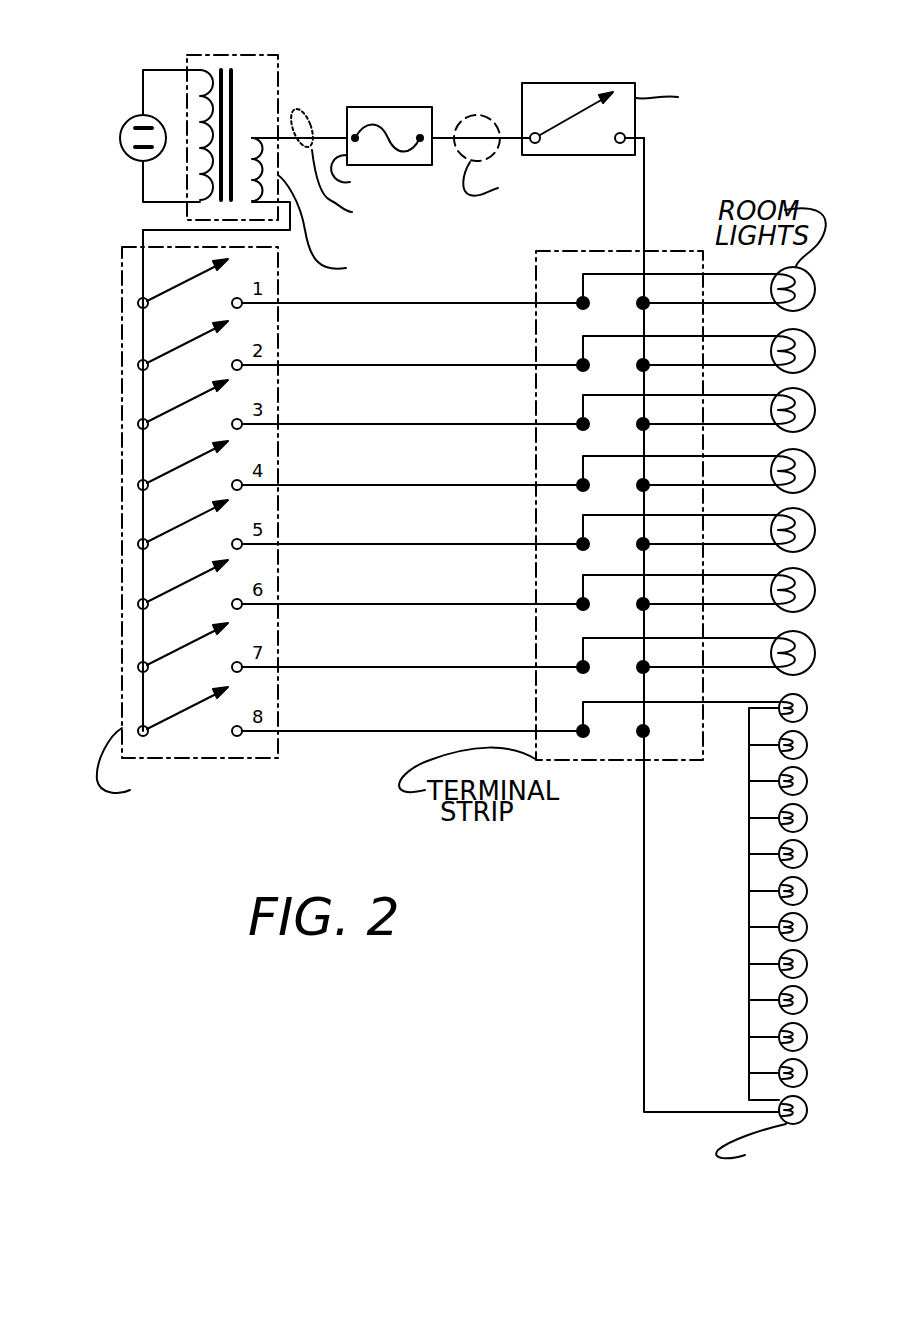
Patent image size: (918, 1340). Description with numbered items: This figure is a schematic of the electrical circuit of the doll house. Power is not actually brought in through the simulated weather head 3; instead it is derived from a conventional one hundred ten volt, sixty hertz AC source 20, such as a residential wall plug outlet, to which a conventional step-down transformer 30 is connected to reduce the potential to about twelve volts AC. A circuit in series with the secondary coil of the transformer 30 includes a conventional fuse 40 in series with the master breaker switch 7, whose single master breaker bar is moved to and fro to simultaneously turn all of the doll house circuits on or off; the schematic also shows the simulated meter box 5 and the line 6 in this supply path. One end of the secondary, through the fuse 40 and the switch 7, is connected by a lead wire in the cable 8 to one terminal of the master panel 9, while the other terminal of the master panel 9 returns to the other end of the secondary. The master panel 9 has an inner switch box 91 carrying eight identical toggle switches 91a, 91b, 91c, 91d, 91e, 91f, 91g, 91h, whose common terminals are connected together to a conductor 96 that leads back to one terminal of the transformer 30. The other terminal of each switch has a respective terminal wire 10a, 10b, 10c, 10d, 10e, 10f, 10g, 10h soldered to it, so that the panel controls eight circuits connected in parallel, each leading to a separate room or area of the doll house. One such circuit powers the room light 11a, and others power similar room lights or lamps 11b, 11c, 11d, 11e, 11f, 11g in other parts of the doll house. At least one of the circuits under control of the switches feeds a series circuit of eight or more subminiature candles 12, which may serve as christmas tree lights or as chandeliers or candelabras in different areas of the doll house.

The weather head 3 is at (315, 108).
The simulated meter box 5 is at (477, 115).
The service line 6 is at (505, 137).
The master breaker switch 7 is at (585, 83).
The cable 8 is at (644, 196).
The master panel 9 is at (110, 406).
The subminiature candles 12 is at (731, 827).
The AC source 20 is at (131, 113).
The step-down transformer 30 is at (240, 55).
The fuse 40 is at (385, 107).
The switch box 91 is at (121, 628).
The conductor 96 is at (142, 232).
The toggle switch 91a is at (232, 303).
The toggle switch 91b is at (232, 365).
The toggle switch 91c is at (232, 424).
The toggle switch 91d is at (232, 485).
The toggle switch 91e is at (232, 544).
The toggle switch 91f is at (232, 604).
The toggle switch 91g is at (232, 667).
The toggle switch 91h is at (232, 731).
The terminal wire 10a is at (347, 298).
The terminal wire 10b is at (372, 360).
The terminal wire 10c is at (384, 419).
The terminal wire 10d is at (397, 480).
The terminal wire 10e is at (409, 539).
The terminal wire 10f is at (419, 599).
The terminal wire 10g is at (432, 662).
The terminal wire 10h is at (444, 726).
The room light 11a is at (816, 289).
The room light 11b is at (816, 351).
The room light 11c is at (816, 410).
The room light 11d is at (816, 471).
The room light 11e is at (816, 530).
The room light 11f is at (816, 590).
The room light 11g is at (816, 653).